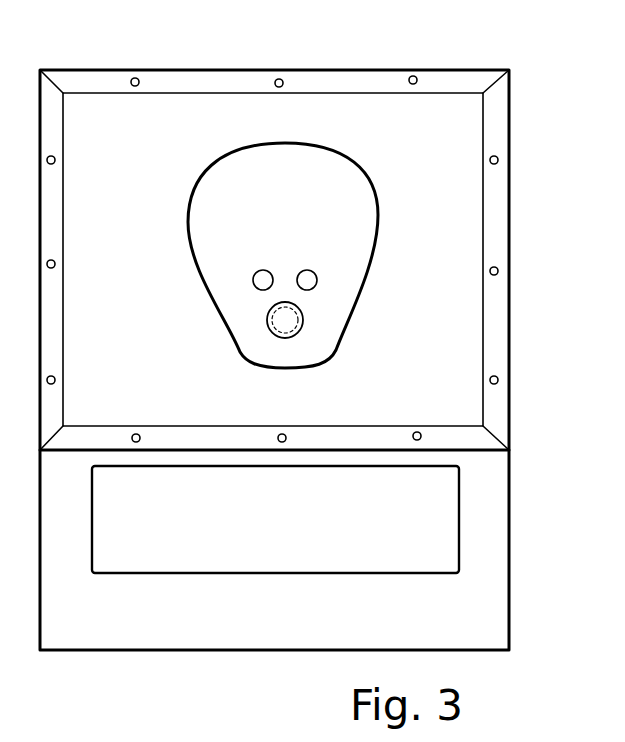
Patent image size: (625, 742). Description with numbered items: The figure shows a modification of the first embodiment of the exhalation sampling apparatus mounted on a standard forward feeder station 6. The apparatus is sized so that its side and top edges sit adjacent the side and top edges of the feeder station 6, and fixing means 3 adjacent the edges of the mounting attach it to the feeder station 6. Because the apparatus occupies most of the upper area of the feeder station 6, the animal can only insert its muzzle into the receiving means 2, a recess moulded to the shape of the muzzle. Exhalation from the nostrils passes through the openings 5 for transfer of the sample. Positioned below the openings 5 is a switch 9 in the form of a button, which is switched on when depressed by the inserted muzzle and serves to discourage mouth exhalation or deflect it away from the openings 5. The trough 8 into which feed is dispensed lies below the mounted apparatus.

The receiving means 2 is at (322, 188).
The fixing means 3 is at (414, 76).
The openings 5 is at (267, 268).
The feeder station 6 is at (511, 348).
The trough 8 is at (410, 517).
The switch 9 is at (280, 320).